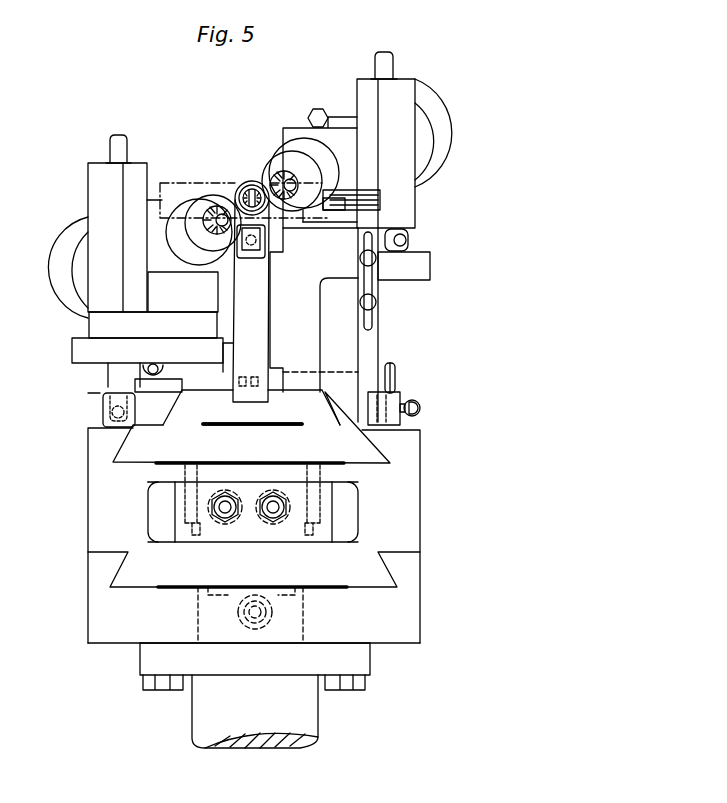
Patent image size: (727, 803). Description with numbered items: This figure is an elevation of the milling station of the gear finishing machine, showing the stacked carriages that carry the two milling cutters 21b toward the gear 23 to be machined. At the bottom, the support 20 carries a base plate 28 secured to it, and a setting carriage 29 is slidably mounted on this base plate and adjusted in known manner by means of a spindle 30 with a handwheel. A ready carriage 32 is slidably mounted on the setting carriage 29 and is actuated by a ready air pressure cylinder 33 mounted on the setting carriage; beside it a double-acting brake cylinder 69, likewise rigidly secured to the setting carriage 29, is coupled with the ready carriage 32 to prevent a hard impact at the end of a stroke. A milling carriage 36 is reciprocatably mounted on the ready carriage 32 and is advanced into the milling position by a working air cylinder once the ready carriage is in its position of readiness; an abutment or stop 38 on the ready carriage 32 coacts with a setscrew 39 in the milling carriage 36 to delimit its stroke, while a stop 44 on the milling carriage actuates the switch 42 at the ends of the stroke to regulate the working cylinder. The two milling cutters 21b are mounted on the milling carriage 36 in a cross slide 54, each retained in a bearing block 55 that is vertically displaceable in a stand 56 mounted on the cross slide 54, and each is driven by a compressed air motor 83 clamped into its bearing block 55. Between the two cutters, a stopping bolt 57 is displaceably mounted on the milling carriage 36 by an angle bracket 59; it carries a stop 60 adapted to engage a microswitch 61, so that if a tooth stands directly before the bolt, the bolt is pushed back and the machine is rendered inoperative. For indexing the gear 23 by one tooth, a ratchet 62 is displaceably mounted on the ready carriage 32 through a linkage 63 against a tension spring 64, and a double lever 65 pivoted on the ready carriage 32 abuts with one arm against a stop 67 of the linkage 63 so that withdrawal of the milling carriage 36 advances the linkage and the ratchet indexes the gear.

The support 20 is at (207, 710).
The milling cutter 21b is at (217, 232).
The gear 23 is at (203, 183).
The base plate 28 is at (408, 599).
The setting carriage 29 is at (408, 526).
The spindle 30 is at (262, 612).
The ready carriage 32 is at (372, 453).
The ready air pressure cylinder 33 is at (288, 509).
The milling carriage 36 is at (275, 413).
The abutment or stop 38 is at (166, 385).
The setscrew 39 is at (158, 364).
The switch 42 is at (100, 396).
The abutment or stop 44 is at (108, 412).
The cross slide 54 is at (110, 331).
The bearing block 55 is at (153, 198).
The stand 56 is at (97, 186).
The stopping bolt 57 is at (252, 182).
The angle bracket 59 is at (265, 358).
The abutment or stop 60 is at (250, 250).
The microswitch 61 is at (262, 262).
The ratchet 62 is at (334, 208).
The linkage 63 is at (374, 348).
The tension spring 64 is at (422, 409).
The double lever 65 is at (398, 374).
The stop 67 is at (393, 364).
The brake cylinder 69 is at (208, 508).
The compressed air motor 83 is at (60, 277).